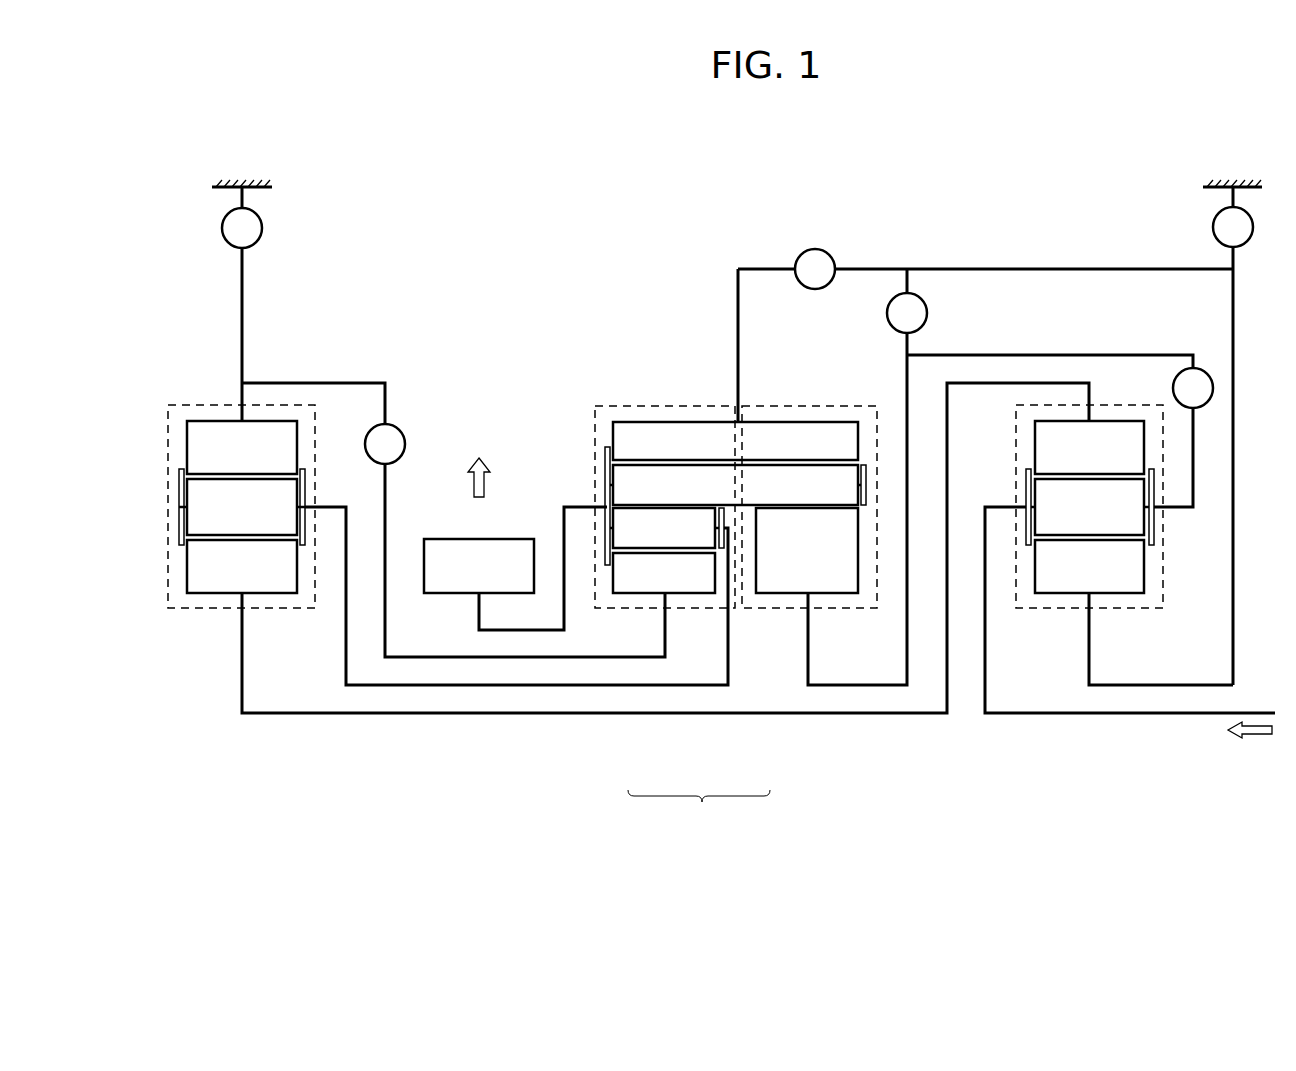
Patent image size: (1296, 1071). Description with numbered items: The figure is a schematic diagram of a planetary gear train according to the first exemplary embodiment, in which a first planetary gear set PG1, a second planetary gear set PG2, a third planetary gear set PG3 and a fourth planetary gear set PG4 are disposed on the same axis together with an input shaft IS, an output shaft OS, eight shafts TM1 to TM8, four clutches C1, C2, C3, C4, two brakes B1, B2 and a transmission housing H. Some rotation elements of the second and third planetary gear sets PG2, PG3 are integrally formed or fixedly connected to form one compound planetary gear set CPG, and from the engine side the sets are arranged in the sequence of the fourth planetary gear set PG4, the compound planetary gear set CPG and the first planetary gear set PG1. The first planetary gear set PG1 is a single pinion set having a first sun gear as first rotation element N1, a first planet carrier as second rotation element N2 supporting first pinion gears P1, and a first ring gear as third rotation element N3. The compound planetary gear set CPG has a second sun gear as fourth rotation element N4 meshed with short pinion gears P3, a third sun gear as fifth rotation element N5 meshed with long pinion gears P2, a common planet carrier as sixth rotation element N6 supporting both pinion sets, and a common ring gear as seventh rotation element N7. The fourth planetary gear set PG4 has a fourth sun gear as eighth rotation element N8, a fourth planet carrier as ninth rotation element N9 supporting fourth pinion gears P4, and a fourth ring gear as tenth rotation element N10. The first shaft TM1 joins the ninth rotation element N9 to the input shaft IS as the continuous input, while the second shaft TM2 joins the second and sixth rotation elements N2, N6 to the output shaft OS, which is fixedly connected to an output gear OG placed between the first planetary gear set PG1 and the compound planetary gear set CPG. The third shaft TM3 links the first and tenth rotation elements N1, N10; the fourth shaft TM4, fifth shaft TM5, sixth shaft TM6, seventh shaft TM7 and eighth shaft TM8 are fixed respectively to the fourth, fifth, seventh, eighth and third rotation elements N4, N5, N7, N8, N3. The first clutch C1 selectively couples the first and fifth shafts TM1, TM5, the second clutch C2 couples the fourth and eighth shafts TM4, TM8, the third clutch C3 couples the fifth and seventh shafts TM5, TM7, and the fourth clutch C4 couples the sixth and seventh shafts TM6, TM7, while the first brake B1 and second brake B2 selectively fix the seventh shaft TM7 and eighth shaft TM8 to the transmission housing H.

The first planetary gear set PG1 is at (199, 620).
The second planetary gear set PG2 is at (627, 620).
The third planetary gear set PG3 is at (771, 620).
The fourth planetary gear set PG4 is at (1130, 620).
The compound planetary gear set CPG is at (699, 811).
The first rotation element N1 is at (242, 566).
The second rotation element N2 is at (181, 507).
The third rotation element N3 is at (242, 447).
The fourth rotation element N4 is at (664, 573).
The fifth rotation element N5 is at (807, 550).
The sixth rotation element N6 is at (605, 456).
The seventh rotation element N7 is at (735, 441).
The eighth rotation element N8 is at (1134, 612).
The ninth rotation element N9 is at (1026, 478).
The tenth rotation element N10 is at (1089, 447).
The first pinion gears P1 is at (242, 507).
The long pinion gears P2 is at (739, 485).
The short pinion gears P3 is at (668, 528).
The fourth pinion gears P4 is at (1089, 507).
The first shaft TM1 is at (987, 678).
The second shaft TM2 is at (388, 685).
The third shaft TM3 is at (878, 713).
The fourth shaft TM4 is at (455, 657).
The fifth shaft TM5 is at (1036, 355).
The sixth shaft TM6 is at (738, 345).
The seventh shaft TM7 is at (1038, 269).
The eighth shaft TM8 is at (312, 383).
The first clutch C1 is at (1183, 437).
The second clutch C2 is at (385, 444).
The third clutch C3 is at (867, 477).
The fourth clutch C4 is at (815, 269).
The first brake B1 is at (1233, 436).
The second brake B2 is at (242, 304).
The transmission housing H is at (241, 180).
The input shaft IS is at (1255, 713).
The output shaft OS is at (520, 630).
The output gear OG is at (479, 525).